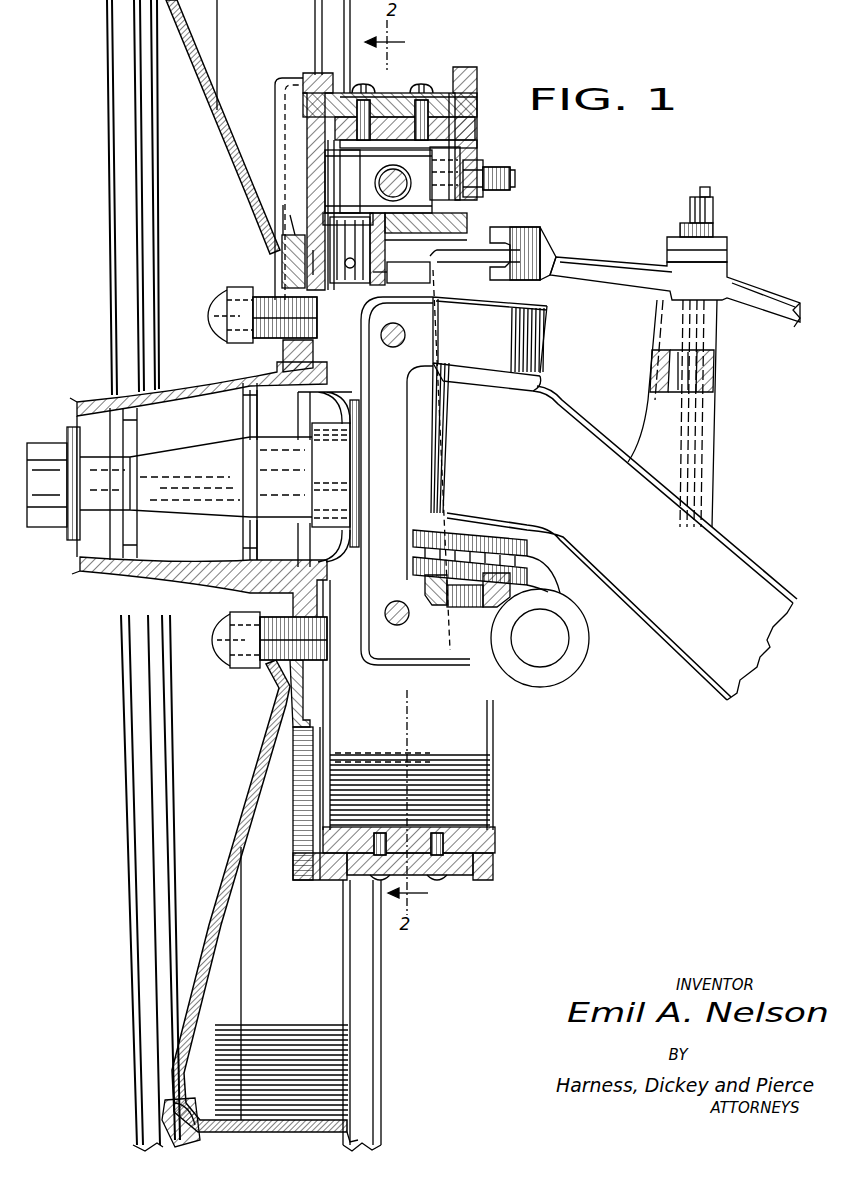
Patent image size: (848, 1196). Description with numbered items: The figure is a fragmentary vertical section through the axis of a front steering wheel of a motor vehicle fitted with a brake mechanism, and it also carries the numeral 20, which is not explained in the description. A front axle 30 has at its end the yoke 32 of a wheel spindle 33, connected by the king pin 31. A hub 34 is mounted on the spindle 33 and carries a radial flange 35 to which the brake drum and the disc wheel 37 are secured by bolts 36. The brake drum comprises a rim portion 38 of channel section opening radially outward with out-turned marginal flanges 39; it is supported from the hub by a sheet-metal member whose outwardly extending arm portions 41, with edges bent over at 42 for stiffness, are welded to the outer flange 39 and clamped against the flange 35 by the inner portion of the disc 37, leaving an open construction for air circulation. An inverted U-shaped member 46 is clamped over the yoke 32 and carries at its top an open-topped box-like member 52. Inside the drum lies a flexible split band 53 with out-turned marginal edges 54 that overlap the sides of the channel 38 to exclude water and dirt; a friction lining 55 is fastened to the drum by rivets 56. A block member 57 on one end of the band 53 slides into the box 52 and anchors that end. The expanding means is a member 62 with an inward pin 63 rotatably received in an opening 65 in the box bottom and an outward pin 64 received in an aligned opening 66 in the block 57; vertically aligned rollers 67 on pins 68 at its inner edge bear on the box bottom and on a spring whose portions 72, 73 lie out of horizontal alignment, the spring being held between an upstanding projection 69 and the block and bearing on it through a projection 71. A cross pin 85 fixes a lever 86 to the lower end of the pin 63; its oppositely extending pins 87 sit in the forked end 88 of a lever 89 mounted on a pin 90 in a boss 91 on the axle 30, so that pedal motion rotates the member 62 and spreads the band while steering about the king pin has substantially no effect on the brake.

The sleeve 20 is at (330, 150).
The front axle 30 is at (602, 498).
The pin 31 is at (460, 593).
The yoke 32 is at (415, 481).
The wheel spindle 33 is at (194, 457).
The hub 34 is at (198, 391).
The radial flange 35 is at (282, 277).
The bolts 36 is at (211, 322).
The disc wheel 37 is at (246, 184).
The rim portion 38 is at (392, 100).
The out-turned marginal flanges 39 is at (316, 76).
The arm portions 41 is at (287, 86).
The bent-over edges 42 is at (287, 104).
The inverted U-shaped member 46 is at (401, 272).
The box-like member 52 is at (480, 147).
The flexible band-like member 53 is at (474, 128).
The out-turned marginal edges 54 is at (300, 80).
The friction lining 55 is at (362, 90).
The rivets 56 is at (424, 90).
The block member 57 is at (477, 113).
The member 62 is at (281, 212).
The inwardly extending pin portion 63 is at (316, 260).
The outwardly extending pin portion 64 is at (322, 216).
The opening 65 is at (292, 216).
The opening 66 is at (384, 174).
The contacting rollers 67 is at (507, 193).
The pins 68 is at (426, 229).
The upstanding projection 69 is at (338, 190).
The upstanding projection 71 is at (375, 100).
The portion 72 is at (378, 188).
The portion 73 is at (430, 210).
The cross pin 85 is at (344, 283).
The lever 86 is at (458, 258).
The pins 87 is at (507, 228).
The forked end 88 is at (538, 240).
The lever 89 is at (600, 257).
The pin 90 is at (695, 368).
The boss 91 is at (707, 422).